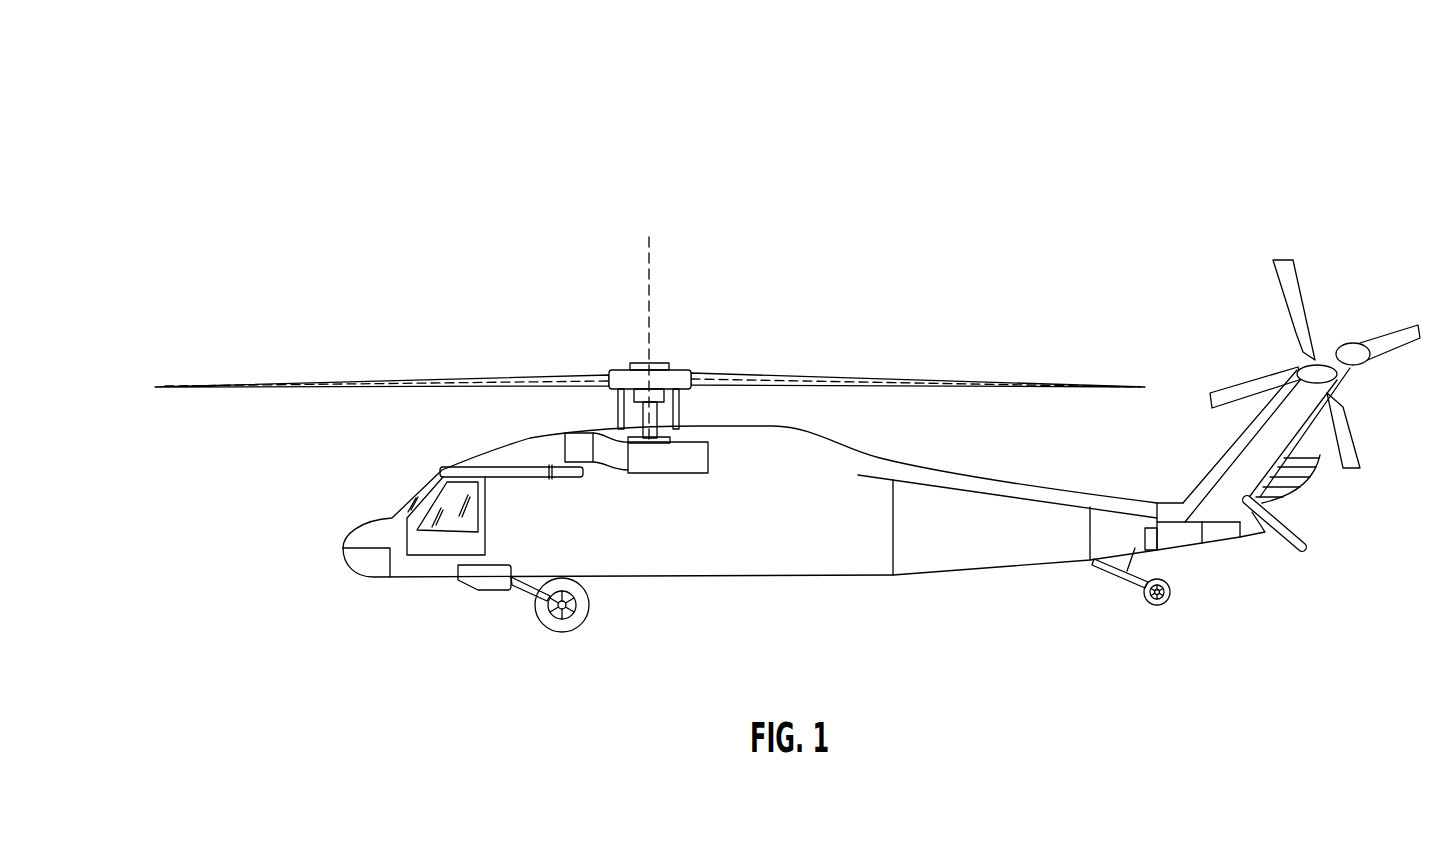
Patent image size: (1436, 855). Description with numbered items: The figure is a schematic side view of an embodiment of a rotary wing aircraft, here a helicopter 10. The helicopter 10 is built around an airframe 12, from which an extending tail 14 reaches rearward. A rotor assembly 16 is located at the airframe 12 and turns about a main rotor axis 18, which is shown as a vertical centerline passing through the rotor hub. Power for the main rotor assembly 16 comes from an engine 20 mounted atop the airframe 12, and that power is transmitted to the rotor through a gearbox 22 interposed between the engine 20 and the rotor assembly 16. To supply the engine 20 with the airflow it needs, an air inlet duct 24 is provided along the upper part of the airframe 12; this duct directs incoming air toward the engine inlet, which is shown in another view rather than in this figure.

The helicopter 10 is at (255, 195).
The airframe 12 is at (665, 562).
The extending tail 14 is at (1052, 553).
The rotor assembly 16 is at (477, 378).
The main rotor axis 18 is at (650, 283).
The engine 20 is at (660, 467).
The gearbox 22 is at (670, 437).
The air inlet duct 24 is at (617, 470).